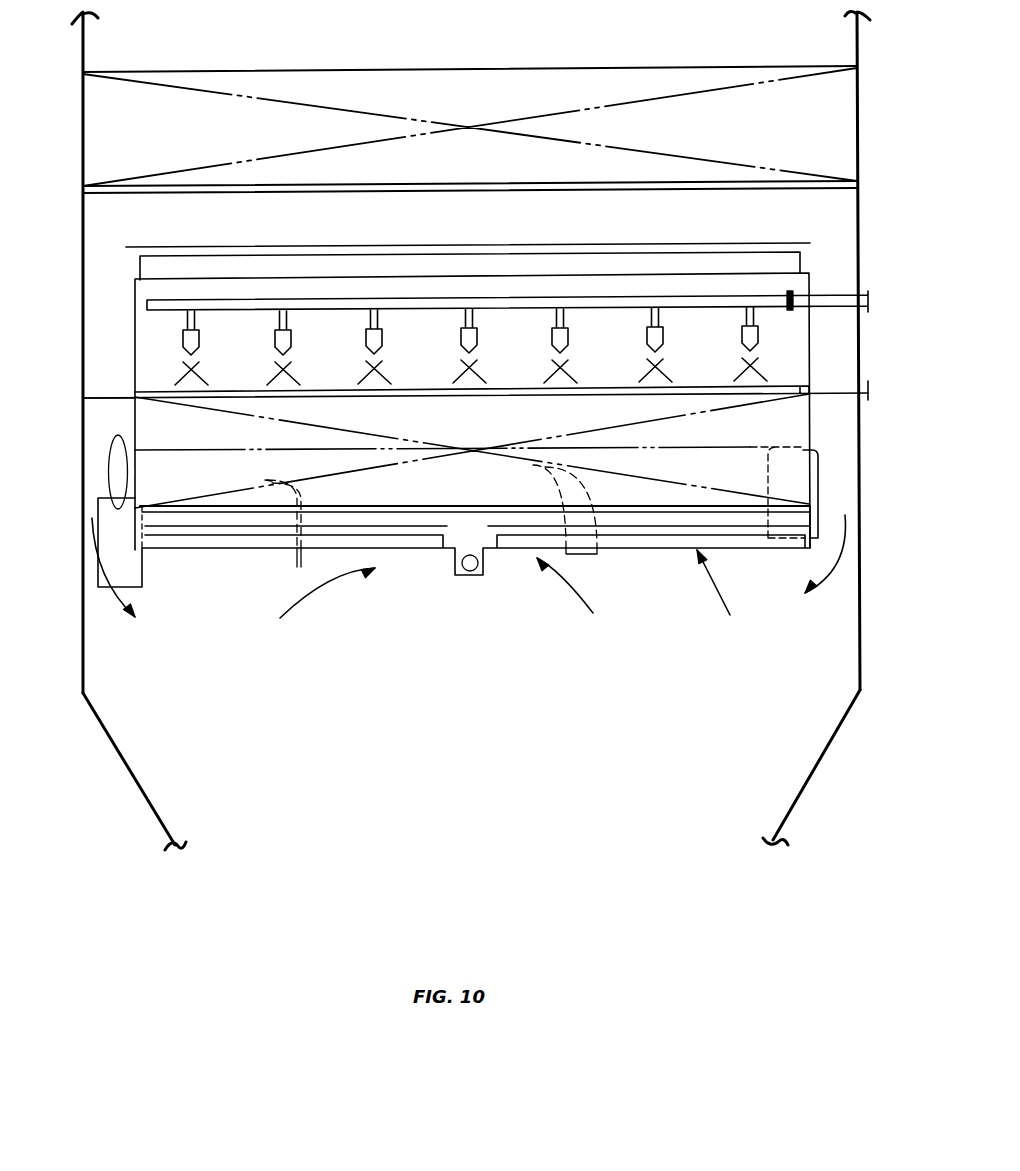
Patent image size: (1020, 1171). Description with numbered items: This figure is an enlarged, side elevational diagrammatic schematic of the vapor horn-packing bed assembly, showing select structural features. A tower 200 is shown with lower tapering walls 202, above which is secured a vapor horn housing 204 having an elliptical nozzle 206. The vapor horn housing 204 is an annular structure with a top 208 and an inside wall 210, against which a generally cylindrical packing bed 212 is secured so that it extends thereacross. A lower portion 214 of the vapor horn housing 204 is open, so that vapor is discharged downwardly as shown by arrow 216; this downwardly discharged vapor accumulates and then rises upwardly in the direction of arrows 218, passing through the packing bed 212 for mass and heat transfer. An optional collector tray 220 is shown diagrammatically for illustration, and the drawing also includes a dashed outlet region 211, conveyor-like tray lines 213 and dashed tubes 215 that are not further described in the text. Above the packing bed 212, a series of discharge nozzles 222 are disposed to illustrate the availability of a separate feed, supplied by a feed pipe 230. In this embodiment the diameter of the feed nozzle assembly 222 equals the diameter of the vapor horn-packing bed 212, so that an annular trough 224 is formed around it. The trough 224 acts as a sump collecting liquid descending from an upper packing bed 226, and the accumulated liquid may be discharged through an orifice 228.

The tower 200 is at (84, 104).
The lower tapering walls 202 is at (138, 776).
The vapor horn housing 204 is at (96, 430).
The elliptical nozzle 206 is at (118, 472).
The top 208 is at (104, 393).
The inside wall 210 is at (142, 445).
The outlet duct 211 is at (660, 448).
The packing bed 212 is at (300, 446).
The conveyor tray 213 is at (428, 506).
The lower portion 214 is at (90, 508).
The drain tubes 215 is at (299, 567).
The arrow 216 is at (870, 572).
The arrows 218 is at (330, 600).
The collector tray 220 is at (734, 590).
The discharge nozzles 222 is at (477, 328).
The annular trough 224 is at (105, 338).
The upper packing bed 226 is at (433, 88).
The orifice 228 is at (868, 395).
The feed pipe 230 is at (868, 292).